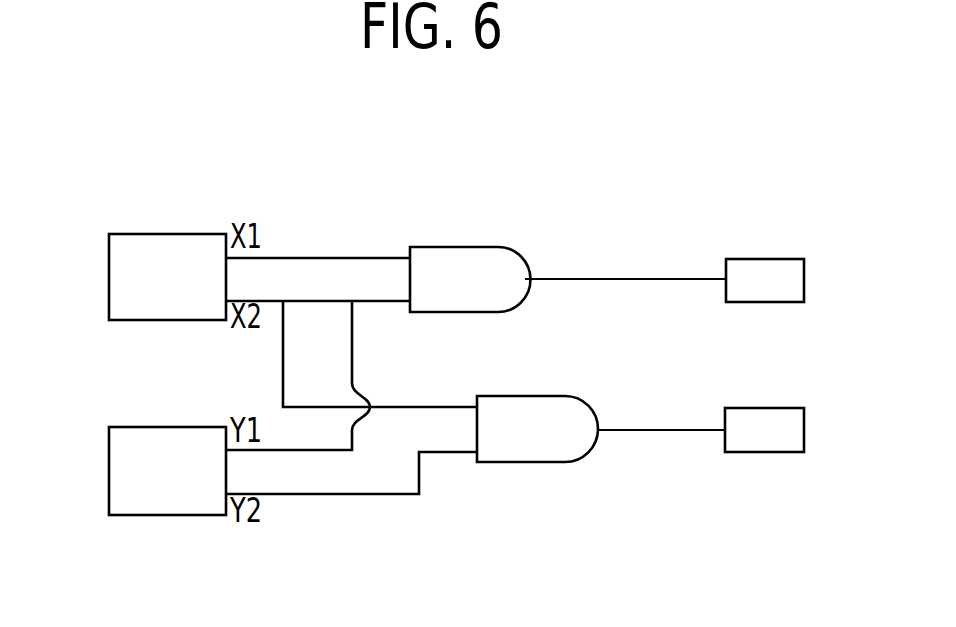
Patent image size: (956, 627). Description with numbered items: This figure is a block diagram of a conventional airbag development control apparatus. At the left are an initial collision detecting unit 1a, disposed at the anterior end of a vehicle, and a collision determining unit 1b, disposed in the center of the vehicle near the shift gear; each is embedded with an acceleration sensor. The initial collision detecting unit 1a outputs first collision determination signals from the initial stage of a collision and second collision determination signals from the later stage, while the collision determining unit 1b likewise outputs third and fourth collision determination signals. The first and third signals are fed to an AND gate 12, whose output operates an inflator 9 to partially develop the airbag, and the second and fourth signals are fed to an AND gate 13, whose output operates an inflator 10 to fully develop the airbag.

The initial collision detecting unit 1a is at (156, 234).
The collision determining unit 1b is at (157, 515).
The AND gate 12 is at (447, 247).
The AND gate 13 is at (545, 463).
The inflator 9 is at (758, 259).
The inflator 10 is at (765, 452).